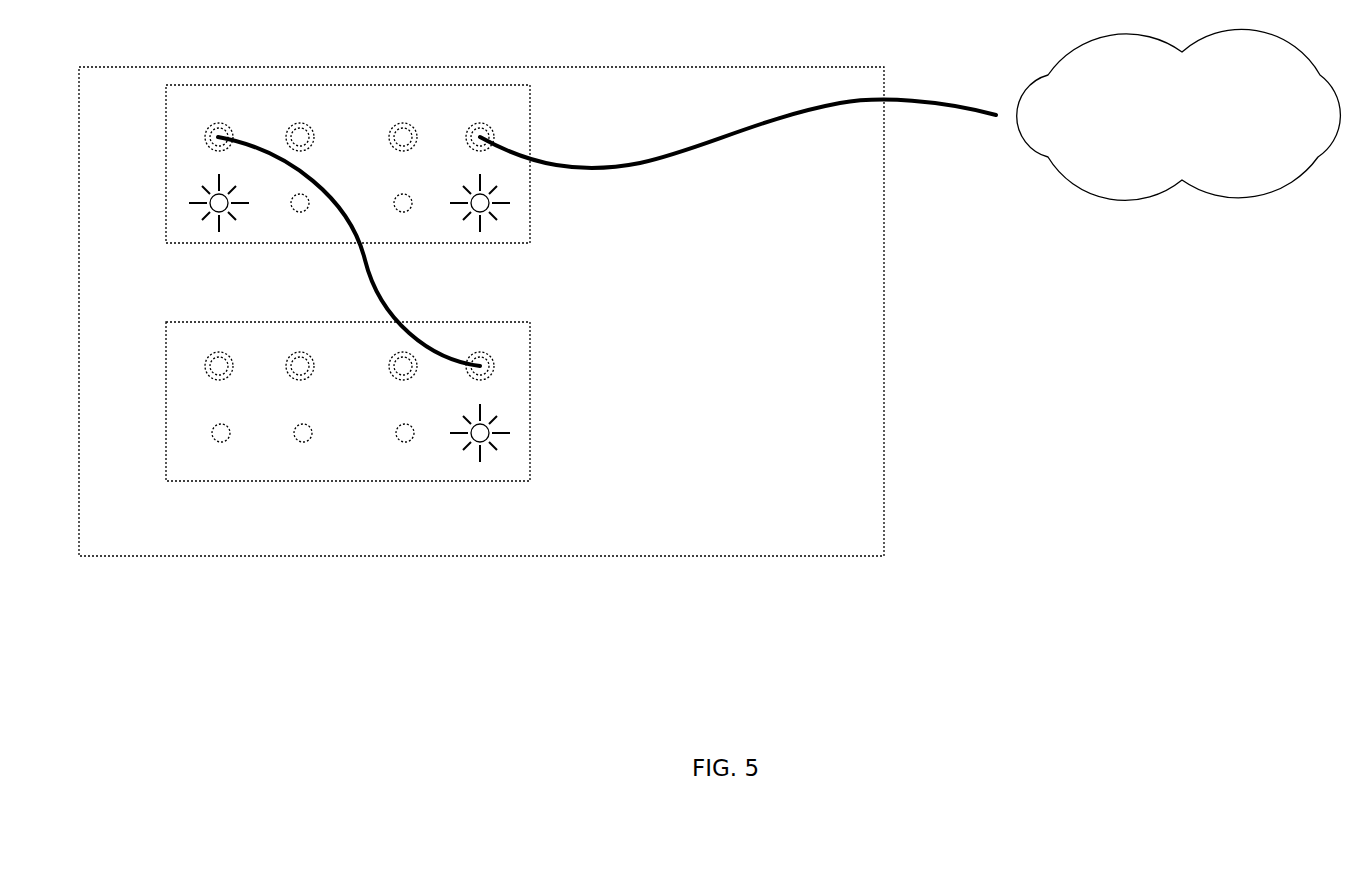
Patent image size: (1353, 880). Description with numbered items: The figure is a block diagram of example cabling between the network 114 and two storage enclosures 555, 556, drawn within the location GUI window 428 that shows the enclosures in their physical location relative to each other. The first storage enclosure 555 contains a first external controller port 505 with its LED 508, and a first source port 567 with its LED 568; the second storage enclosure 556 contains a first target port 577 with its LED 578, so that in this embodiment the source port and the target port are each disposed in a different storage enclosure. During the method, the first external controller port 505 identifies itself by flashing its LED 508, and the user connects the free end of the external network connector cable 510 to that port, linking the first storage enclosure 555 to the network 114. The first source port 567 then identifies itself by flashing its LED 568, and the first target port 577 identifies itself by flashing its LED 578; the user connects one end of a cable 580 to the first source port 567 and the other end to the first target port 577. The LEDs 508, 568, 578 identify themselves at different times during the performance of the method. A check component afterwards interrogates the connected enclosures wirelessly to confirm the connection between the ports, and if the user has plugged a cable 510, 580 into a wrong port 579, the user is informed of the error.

The network 114 is at (1088, 193).
The location GUI window 428 is at (245, 556).
The first external controller port 505 is at (494, 130).
The LED 508 is at (510, 203).
The external network connector cable 510 is at (833, 106).
The first storage enclosure 555 is at (531, 243).
The second storage enclosure 556 is at (531, 481).
The first source port 567 is at (204, 136).
The LED 568 is at (219, 222).
The first target port 577 is at (498, 365).
The LED 578 is at (510, 433).
The wrong port 579 is at (220, 380).
The cable 580 is at (367, 279).